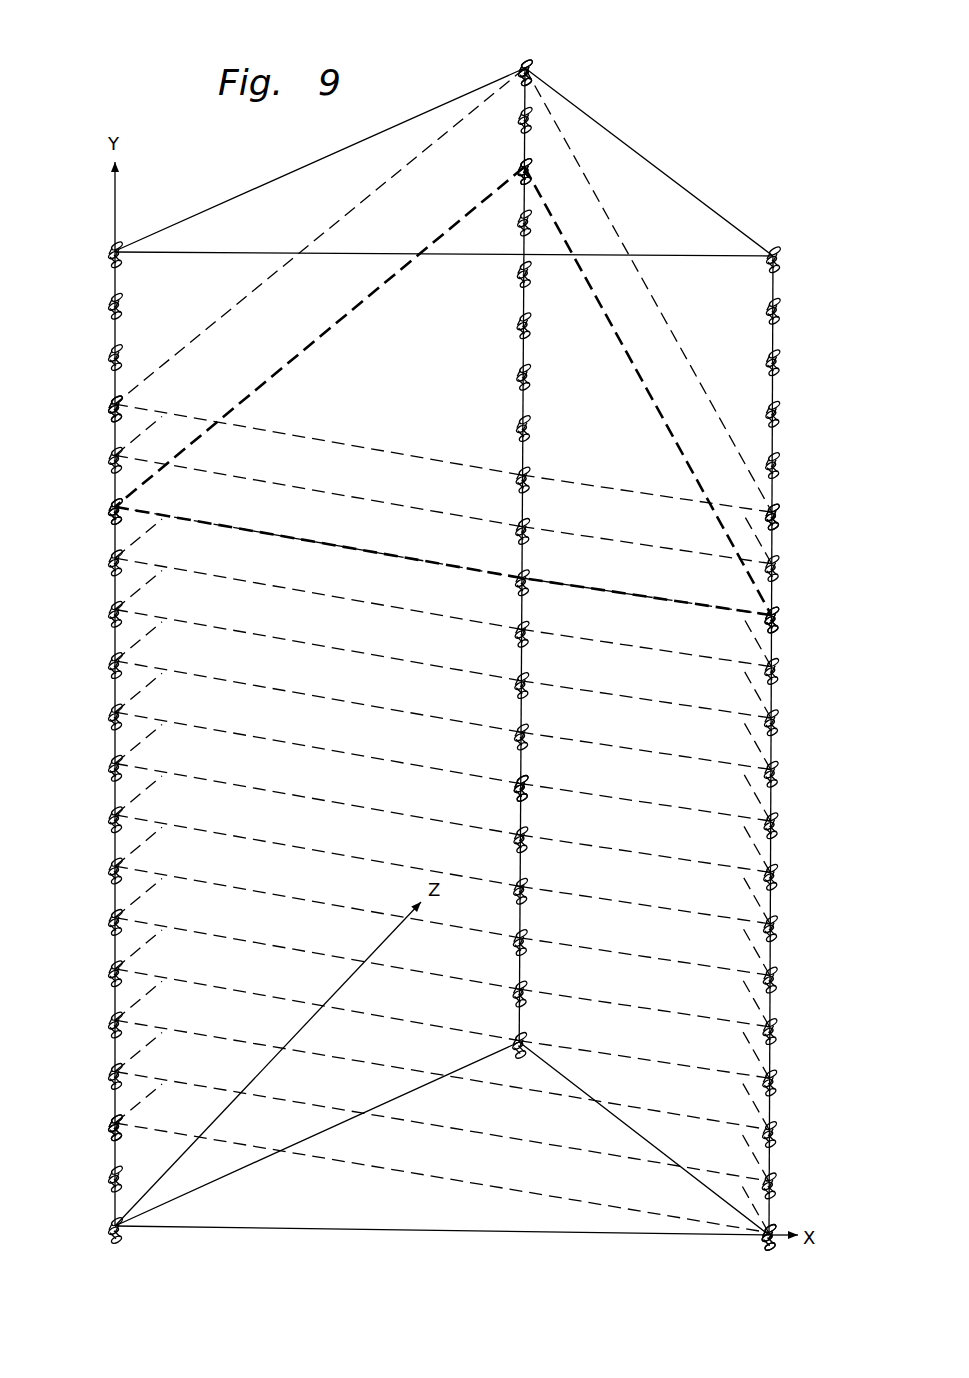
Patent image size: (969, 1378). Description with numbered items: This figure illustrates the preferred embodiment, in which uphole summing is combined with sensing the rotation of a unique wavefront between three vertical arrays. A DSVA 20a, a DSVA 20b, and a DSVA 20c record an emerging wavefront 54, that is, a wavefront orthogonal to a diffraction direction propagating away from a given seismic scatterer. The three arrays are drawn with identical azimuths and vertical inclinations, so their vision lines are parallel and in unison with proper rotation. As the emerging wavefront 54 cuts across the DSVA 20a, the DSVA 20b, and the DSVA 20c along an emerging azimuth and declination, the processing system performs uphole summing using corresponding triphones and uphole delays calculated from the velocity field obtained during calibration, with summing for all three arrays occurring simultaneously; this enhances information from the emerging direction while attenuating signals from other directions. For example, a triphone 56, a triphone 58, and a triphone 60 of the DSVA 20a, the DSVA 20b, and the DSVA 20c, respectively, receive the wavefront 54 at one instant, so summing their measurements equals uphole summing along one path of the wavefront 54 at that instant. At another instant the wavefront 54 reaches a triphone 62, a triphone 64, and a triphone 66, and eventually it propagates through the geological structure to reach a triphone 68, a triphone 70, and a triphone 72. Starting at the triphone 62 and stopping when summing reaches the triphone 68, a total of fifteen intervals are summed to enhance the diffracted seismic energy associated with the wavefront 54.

The DSVA 20a is at (134, 222).
The DSVA 20b is at (540, 68).
The DSVA 20c is at (782, 246).
The emerging wavefront 54 is at (572, 485).
The triphone 56 is at (105, 505).
The triphone 58 is at (517, 172).
The triphone 60 is at (783, 608).
The triphone 62 is at (780, 1227).
The triphone 64 is at (510, 790).
The triphone 66 is at (105, 1122).
The triphone 68 is at (515, 66).
The triphone 70 is at (105, 402).
The triphone 72 is at (783, 505).